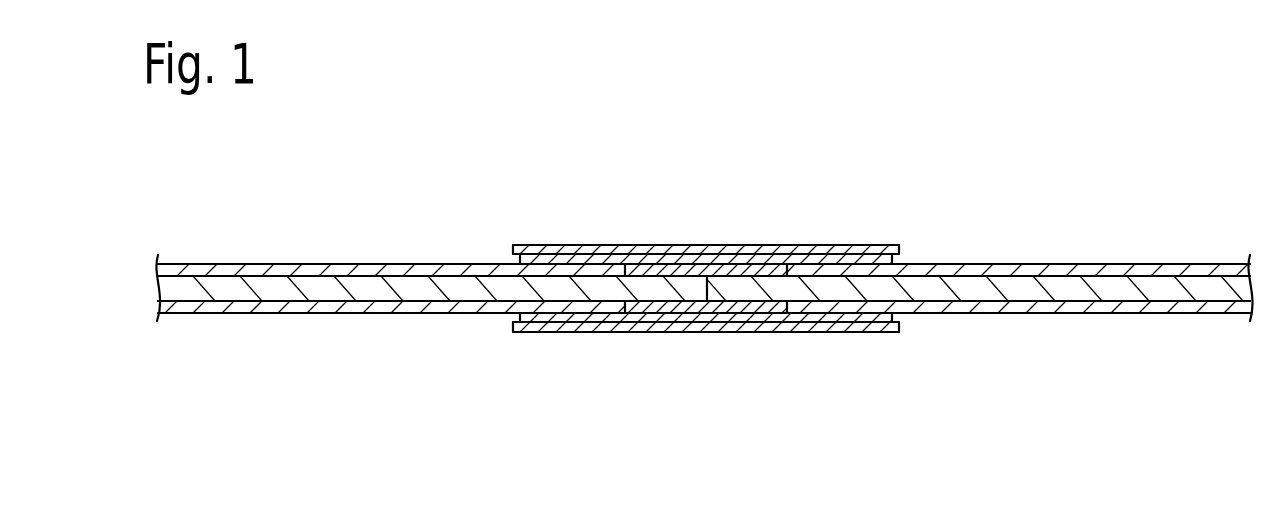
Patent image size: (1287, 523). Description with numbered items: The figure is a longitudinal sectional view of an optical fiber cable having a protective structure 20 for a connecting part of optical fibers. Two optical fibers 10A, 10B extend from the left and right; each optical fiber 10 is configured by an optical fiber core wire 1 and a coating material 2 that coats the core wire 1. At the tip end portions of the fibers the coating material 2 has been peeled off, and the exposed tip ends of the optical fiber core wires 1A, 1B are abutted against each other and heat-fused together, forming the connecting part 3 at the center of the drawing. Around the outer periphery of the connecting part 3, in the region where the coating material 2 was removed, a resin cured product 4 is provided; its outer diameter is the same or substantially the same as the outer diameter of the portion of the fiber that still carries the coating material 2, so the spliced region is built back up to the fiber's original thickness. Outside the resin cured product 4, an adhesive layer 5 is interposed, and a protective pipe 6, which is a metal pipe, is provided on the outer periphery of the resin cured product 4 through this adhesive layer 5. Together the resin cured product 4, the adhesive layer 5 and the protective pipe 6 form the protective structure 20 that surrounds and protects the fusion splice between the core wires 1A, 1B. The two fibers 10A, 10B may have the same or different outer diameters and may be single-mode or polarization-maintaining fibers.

The optical fiber core wire 1 is at (704, 288).
The optical fiber core wire 1A is at (222, 288).
The optical fiber core wire 1B is at (1150, 288).
The coating material 2 is at (368, 270).
The connecting part 3 is at (695, 285).
The resin cured product 4 is at (652, 268).
The adhesive layer 5 is at (605, 260).
The protective pipe 6 is at (553, 250).
The optical fiber 10 is at (704, 222).
The optical fiber 10A is at (388, 192).
The optical fiber 10B is at (1220, 192).
The protective structure 20 is at (693, 404).